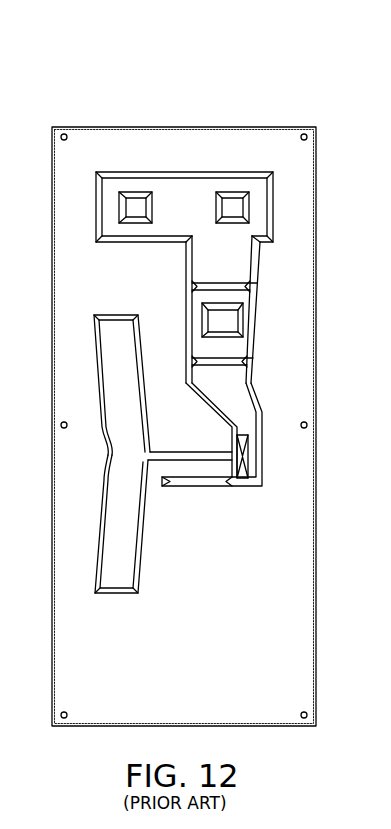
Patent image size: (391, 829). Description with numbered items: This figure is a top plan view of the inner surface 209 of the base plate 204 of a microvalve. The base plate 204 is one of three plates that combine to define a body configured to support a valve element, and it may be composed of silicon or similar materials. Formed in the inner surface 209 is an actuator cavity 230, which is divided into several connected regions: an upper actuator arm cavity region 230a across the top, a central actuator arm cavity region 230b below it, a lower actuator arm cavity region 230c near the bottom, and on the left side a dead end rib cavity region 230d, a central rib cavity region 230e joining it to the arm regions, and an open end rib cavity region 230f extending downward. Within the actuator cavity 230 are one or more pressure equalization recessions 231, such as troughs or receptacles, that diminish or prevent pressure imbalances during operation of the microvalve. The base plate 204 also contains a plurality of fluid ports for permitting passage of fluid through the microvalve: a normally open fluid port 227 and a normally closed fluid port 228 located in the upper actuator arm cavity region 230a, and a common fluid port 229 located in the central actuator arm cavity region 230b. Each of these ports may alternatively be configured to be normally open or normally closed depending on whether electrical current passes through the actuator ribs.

The base plate 204 is at (187, 373).
The inner surface 209 is at (283, 137).
The normally open fluid port 227 is at (130, 206).
The normally closed fluid port 228 is at (240, 207).
The common fluid port 229 is at (225, 320).
The actuator cavity 230 is at (187, 345).
The upper actuator arm cavity region 230a is at (191, 277).
The central actuator arm cavity region 230b is at (283, 318).
The lower actuator arm cavity region 230c is at (258, 474).
The dead end rib cavity region 230d is at (113, 337).
The central rib cavity region 230e is at (103, 481).
The open end rib cavity region 230f is at (112, 578).
The pressure equalization recession 231 is at (192, 291).